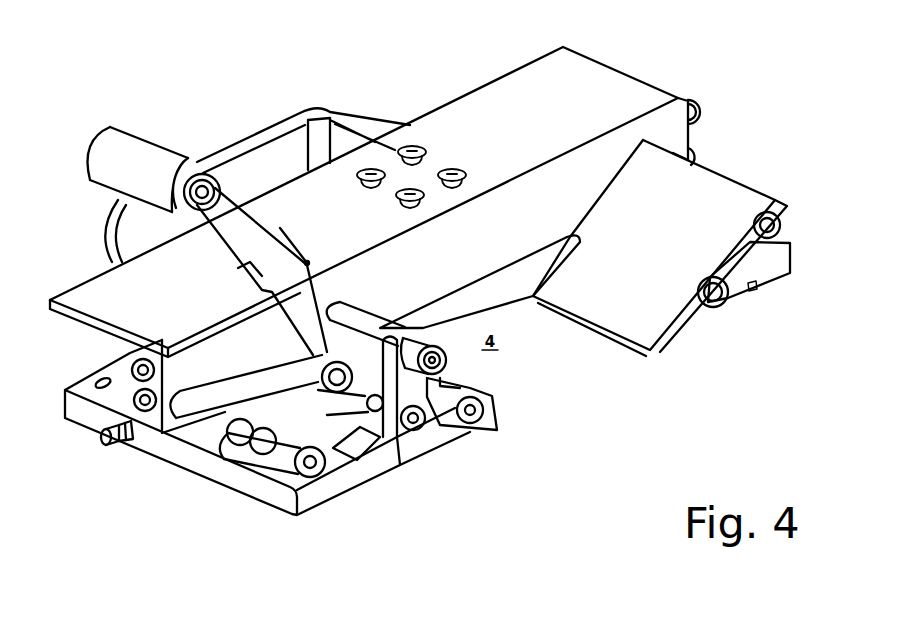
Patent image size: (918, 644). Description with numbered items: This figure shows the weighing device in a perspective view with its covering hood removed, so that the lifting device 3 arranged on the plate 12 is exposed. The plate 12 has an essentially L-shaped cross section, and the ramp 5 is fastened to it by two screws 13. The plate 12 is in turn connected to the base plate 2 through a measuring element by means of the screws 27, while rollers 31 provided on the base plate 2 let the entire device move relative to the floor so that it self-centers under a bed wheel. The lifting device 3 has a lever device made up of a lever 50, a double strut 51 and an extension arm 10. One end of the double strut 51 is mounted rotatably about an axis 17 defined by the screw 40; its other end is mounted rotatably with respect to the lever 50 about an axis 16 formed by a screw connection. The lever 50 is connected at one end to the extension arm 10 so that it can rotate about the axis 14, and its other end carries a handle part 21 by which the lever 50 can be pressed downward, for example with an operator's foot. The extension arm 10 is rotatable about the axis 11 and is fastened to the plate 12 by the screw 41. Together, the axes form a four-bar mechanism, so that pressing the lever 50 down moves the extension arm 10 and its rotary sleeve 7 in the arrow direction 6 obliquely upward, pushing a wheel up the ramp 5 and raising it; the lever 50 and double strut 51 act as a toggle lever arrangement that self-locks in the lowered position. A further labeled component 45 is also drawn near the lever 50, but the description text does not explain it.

The base plate 2 is at (738, 297).
The lifting device 3 is at (375, 403).
The ramp 5 is at (665, 312).
The arrow direction 6 is at (478, 374).
The rotary sleeve 7 is at (447, 378).
The extension arm 10 is at (415, 428).
The axis 11 is at (380, 328).
The plate 12 is at (512, 105).
The screws 13 is at (775, 234).
The axis 14 is at (398, 440).
The axis 16 is at (380, 435).
The axis 17 is at (277, 456).
The handle part 21 is at (105, 148).
The screws 27 is at (414, 150).
The rollers 31 is at (752, 250).
The screw 40 is at (316, 474).
The screw 41 is at (447, 362).
The lever 45 is at (262, 176).
The lever 50 is at (293, 293).
The double strut 51 is at (290, 410).